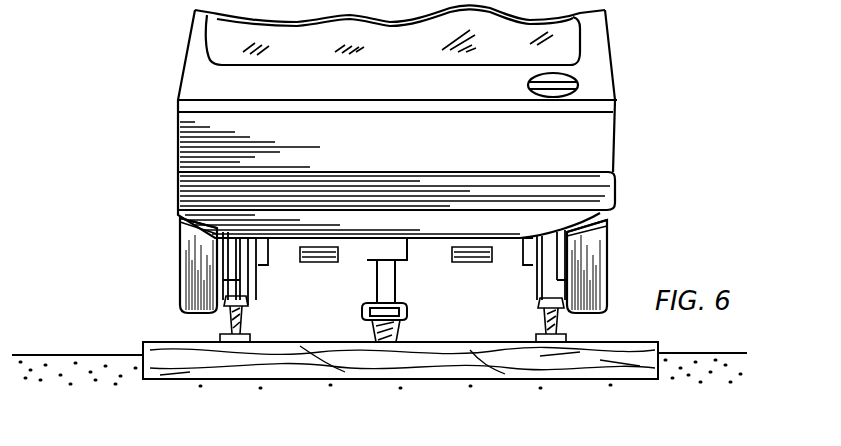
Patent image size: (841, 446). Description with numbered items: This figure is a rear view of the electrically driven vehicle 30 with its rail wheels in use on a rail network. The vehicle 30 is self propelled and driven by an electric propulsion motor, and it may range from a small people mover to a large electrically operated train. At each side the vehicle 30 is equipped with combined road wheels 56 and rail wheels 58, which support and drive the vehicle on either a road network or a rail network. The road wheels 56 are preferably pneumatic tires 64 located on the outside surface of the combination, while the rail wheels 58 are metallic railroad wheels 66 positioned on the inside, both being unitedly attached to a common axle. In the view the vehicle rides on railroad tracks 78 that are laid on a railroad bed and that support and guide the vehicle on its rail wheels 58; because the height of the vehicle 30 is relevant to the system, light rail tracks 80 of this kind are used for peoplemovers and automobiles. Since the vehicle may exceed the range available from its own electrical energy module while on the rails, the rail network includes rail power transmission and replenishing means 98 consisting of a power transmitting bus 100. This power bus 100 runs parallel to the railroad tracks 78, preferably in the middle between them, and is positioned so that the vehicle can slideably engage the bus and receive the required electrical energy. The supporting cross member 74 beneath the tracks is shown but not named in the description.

The vehicle 30 is at (613, 72).
The road wheels 56 is at (180, 228).
The rail wheels 58 is at (245, 262).
The pneumatic tires 64 is at (178, 228).
The metallic railroad wheels 66 is at (255, 300).
The railroad tie 74 is at (165, 342).
The railroad tracks 78 is at (218, 320).
The light rail tracks 80 is at (218, 320).
The rail power transmission and replenishing means 98 is at (400, 330).
The power transmitting bus 100 is at (370, 320).